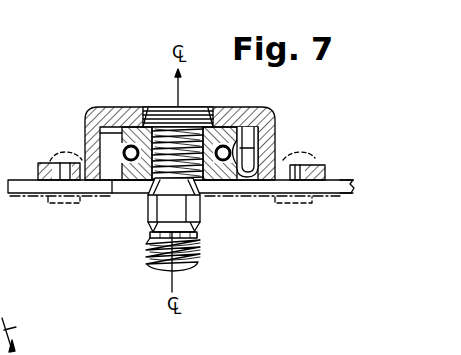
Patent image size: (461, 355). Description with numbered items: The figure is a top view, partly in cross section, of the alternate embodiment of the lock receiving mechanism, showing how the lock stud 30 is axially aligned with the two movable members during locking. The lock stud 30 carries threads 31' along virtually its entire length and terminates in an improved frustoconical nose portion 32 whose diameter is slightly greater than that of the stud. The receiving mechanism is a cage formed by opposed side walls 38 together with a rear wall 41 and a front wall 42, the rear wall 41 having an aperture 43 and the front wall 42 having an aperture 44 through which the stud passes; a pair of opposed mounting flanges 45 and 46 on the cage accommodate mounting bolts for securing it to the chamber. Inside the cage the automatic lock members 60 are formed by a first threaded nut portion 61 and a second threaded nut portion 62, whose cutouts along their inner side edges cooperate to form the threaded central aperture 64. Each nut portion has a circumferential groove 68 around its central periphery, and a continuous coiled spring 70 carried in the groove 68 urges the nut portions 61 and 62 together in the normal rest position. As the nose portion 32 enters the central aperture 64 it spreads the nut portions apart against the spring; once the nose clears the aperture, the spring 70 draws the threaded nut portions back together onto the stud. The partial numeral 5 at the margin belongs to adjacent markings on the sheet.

The lock stud 30 is at (207, 265).
The threads 31' is at (181, 234).
The nose portion 32 is at (200, 210).
The side walls 38 is at (9, 227).
The adjacent figure element 5 is at (4, 277).
The rear wall 41 is at (125, 106).
The front wall 42 is at (112, 190).
The aperture 43 is at (162, 115).
The aperture 44 is at (215, 186).
The mounting flange 45 is at (52, 162).
The mounting flange 46 is at (350, 195).
The automatic lock members 60 is at (145, 182).
The first threaded nut portion 61 is at (105, 130).
The second threaded nut portion 62 is at (285, 160).
The threaded central aperture 64 is at (188, 127).
The circumferential groove 68 is at (243, 143).
The continuous coiled spring 70 is at (255, 148).